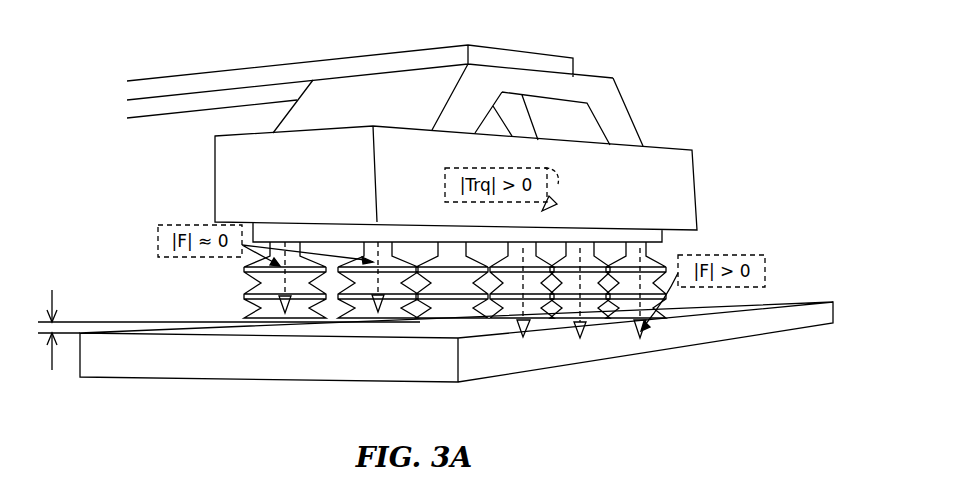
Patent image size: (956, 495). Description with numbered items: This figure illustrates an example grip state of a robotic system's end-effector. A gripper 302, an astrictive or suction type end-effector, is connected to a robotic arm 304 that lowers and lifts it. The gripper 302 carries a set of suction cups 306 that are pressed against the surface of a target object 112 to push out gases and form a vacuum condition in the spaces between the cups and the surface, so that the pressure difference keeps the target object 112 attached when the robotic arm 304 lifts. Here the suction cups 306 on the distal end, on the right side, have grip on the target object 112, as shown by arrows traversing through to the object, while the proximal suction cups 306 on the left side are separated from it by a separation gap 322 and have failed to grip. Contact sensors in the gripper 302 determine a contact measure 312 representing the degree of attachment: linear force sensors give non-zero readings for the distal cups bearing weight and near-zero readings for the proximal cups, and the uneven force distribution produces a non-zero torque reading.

The target object 112 is at (250, 360).
The gripper 302 is at (243, 178).
The robotic arm 304 is at (262, 72).
The suction cups 306 is at (210, 253).
The contact measure 312 is at (558, 183).
The separation gap 322 is at (225, 315).